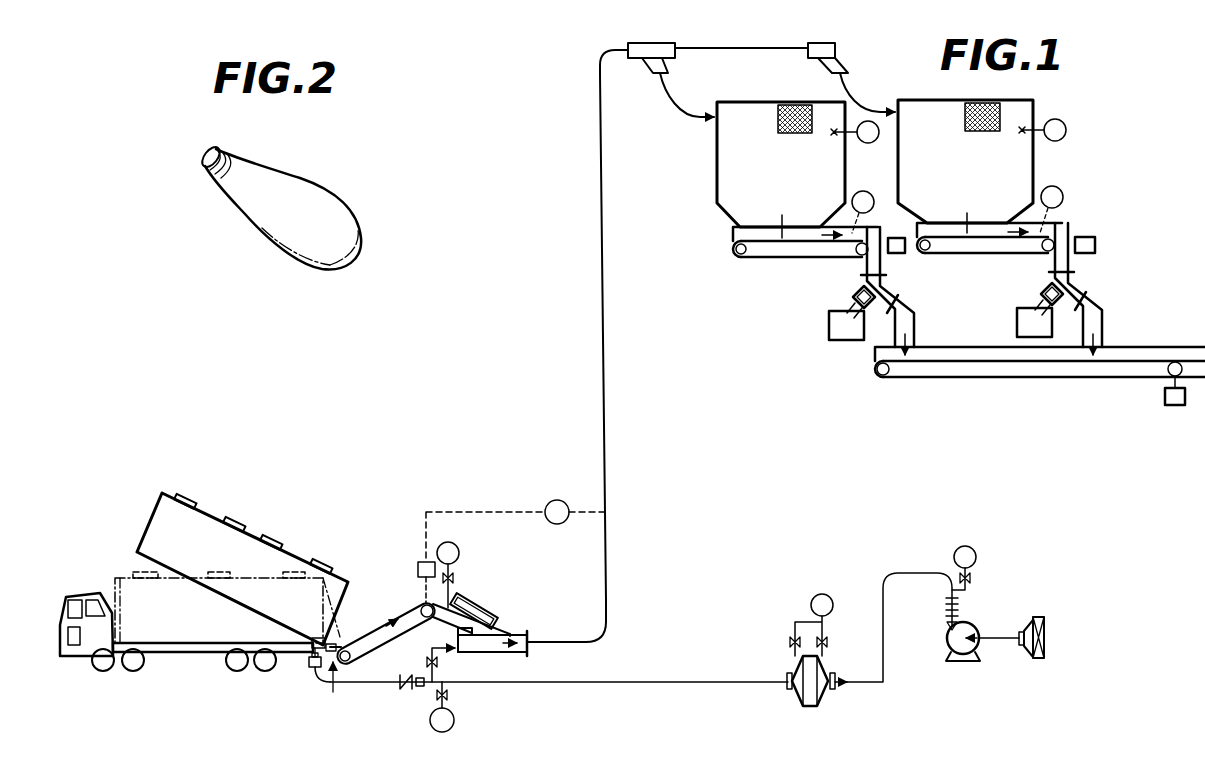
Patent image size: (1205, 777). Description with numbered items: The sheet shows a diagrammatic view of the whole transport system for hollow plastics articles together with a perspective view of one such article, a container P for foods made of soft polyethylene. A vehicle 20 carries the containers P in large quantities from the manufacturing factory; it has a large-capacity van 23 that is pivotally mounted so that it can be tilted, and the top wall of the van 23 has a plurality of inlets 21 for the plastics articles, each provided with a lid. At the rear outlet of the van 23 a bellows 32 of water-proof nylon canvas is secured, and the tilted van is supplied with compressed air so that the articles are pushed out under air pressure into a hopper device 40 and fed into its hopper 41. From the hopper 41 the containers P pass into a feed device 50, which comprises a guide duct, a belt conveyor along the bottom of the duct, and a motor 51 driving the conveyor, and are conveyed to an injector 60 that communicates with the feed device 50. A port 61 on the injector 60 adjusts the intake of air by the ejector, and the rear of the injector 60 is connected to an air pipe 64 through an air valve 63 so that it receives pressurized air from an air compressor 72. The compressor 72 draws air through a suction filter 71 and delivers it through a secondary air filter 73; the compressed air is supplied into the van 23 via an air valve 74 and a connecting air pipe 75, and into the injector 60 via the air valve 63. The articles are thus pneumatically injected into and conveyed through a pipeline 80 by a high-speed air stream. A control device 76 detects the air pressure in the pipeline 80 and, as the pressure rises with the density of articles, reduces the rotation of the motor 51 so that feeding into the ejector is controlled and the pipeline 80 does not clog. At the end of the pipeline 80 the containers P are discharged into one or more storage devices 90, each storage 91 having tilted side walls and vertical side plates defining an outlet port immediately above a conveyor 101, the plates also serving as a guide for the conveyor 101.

In FIG. 1, the vehicle 20 is at (132, 590).
In FIG. 1, the inlets 21 is at (248, 528).
In FIG. 1, the van 23 is at (285, 552).
In FIG. 1, the bellows 32 is at (341, 640).
In FIG. 1, the hopper device 40 is at (352, 720).
In FIG. 1, the hopper 41 is at (345, 665).
In FIG. 1, the feed device 50 is at (378, 636).
In FIG. 1, the motor 51 is at (418, 560).
In FIG. 1, the injector 60 is at (490, 645).
In FIG. 1, the port 61 is at (484, 612).
In FIG. 1, the air valve 63 is at (428, 666).
In FIG. 1, the air pipe 64 is at (559, 709).
In FIG. 1, the suction filter 71 is at (1038, 620).
In FIG. 1, the air compressor 72 is at (968, 628).
In FIG. 1, the secondary air filter 73 is at (810, 697).
In FIG. 1, the air valve 74 is at (404, 689).
In FIG. 1, the connecting air pipe 75 is at (308, 670).
In FIG. 1, the control device 76 is at (556, 500).
In FIG. 1, the pipeline 80 is at (606, 398).
In FIG. 1, the storage device 90 is at (715, 153).
In FIG. 1, the storage 91 is at (735, 182).
In FIG. 1, the conveyor 101 is at (762, 258).
In FIG. 2, the containers P is at (313, 195).